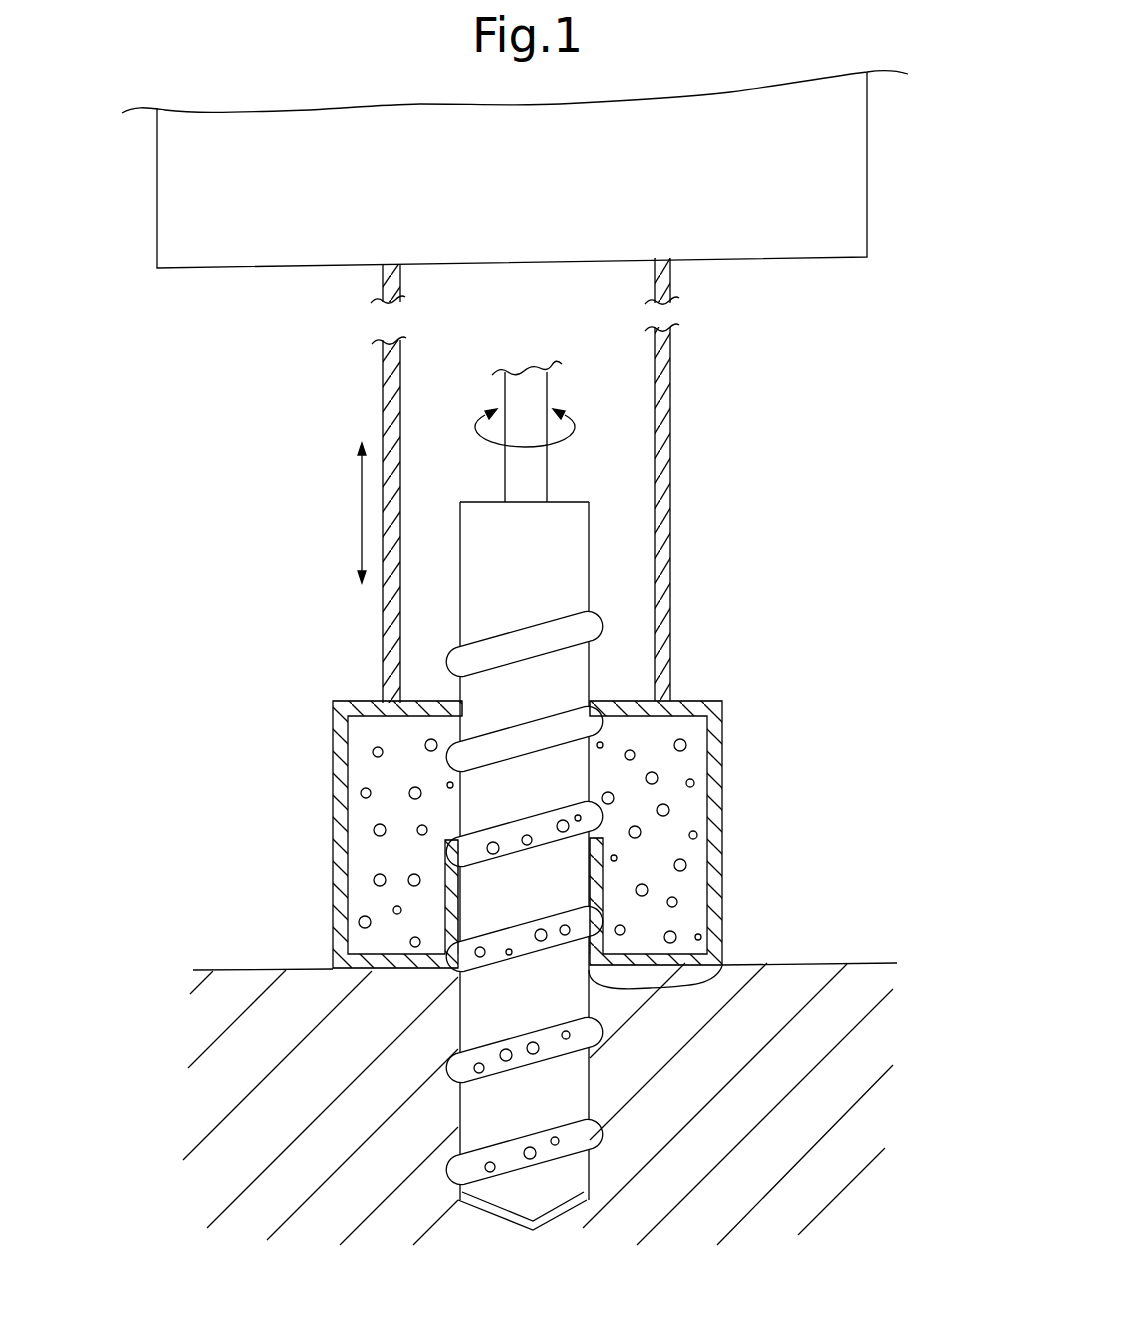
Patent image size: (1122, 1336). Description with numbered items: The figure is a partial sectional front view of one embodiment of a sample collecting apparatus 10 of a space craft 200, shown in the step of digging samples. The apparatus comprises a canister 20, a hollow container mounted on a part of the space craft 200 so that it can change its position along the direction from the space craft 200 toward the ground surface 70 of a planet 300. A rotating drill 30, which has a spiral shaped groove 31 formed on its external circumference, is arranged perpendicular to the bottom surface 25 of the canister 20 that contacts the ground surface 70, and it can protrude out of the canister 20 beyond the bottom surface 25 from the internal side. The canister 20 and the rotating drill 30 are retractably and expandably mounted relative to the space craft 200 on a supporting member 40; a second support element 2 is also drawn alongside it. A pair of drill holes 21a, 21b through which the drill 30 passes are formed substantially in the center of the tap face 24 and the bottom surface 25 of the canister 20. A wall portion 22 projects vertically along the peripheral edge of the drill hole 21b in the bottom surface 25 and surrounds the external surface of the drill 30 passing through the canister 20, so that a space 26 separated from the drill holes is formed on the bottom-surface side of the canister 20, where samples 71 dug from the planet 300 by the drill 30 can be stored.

The space craft 200 is at (841, 167).
The supporting member 40 is at (383, 369).
The support rod 2 is at (670, 407).
The sample collecting apparatus 10 is at (307, 553).
The rotating drill 30 is at (521, 795).
The spiral shaped groove 31 is at (431, 642).
The canister 20 is at (695, 757).
The tap face 24 is at (372, 700).
The bottom surface 25 is at (383, 955).
The wall portion 22 is at (605, 880).
The drill hole 21a is at (583, 702).
The drill hole 21b is at (707, 970).
The space 26 is at (657, 850).
The samples 71 is at (372, 752).
The ground surface 70 is at (228, 970).
The planet 300 is at (268, 1067).